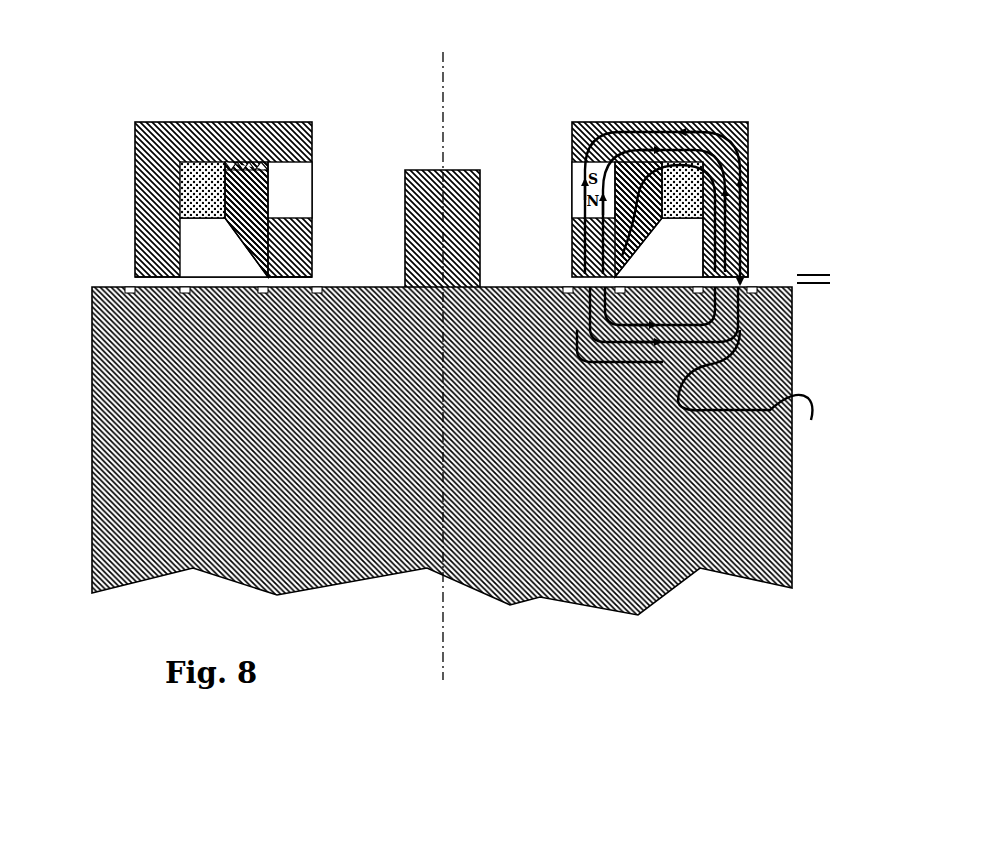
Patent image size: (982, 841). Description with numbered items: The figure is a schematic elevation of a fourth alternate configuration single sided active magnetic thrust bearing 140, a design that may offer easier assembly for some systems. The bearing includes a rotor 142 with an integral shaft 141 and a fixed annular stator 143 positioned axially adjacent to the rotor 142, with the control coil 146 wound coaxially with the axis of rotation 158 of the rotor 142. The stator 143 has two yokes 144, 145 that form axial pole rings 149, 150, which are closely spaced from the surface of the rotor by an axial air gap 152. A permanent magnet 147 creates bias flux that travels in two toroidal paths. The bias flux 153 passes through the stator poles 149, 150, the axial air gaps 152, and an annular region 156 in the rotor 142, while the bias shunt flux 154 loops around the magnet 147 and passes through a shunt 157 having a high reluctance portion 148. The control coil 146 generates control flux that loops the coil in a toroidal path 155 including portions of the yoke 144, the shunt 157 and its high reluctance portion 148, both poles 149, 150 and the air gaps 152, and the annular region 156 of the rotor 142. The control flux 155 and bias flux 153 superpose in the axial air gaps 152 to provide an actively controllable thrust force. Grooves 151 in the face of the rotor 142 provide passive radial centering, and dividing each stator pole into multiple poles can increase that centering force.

The single sided active magnetic thrust bearing 140 is at (278, 50).
The integral shaft 141 is at (458, 170).
The rotor 142 is at (530, 287).
The fixed annular stator 143 is at (746, 112).
The yoke 144 is at (312, 130).
The yoke 145 is at (312, 245).
The control coil 146 is at (200, 220).
The permanent magnet 147 is at (312, 190).
The high reluctance portion 148 is at (245, 168).
The axial pole ring 149 is at (157, 283).
The axial pole ring 150 is at (290, 285).
The grooves 151 is at (130, 293).
The axial air gap 152 is at (838, 280).
The bias flux 153 is at (745, 243).
The bias shunt flux 154 is at (632, 250).
The toroidal path of control flux 155 is at (740, 166).
The annular region 156 is at (706, 373).
The shunt 157 is at (253, 232).
The axis of rotation 158 is at (445, 95).